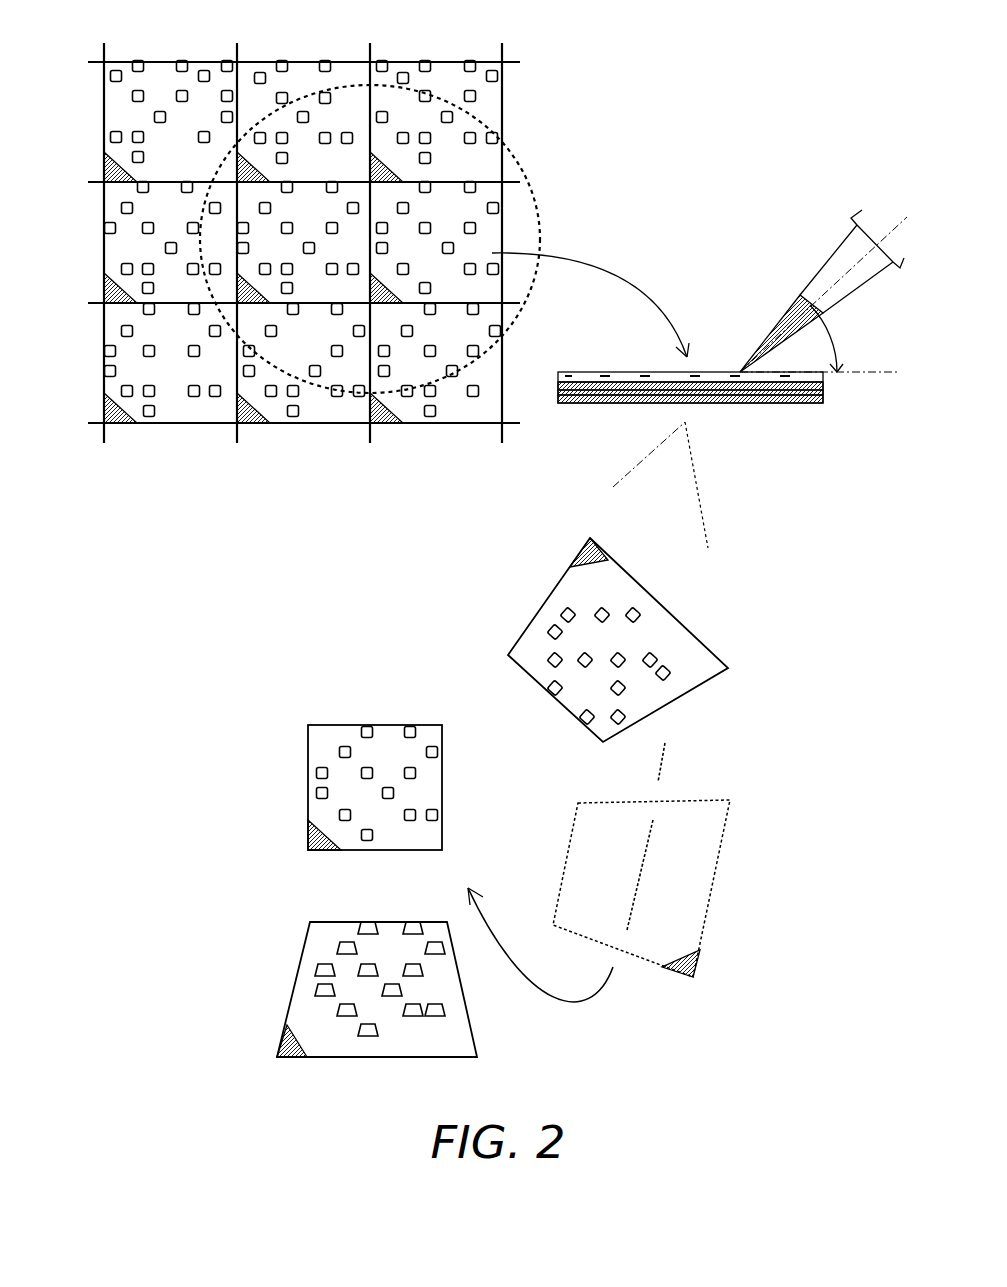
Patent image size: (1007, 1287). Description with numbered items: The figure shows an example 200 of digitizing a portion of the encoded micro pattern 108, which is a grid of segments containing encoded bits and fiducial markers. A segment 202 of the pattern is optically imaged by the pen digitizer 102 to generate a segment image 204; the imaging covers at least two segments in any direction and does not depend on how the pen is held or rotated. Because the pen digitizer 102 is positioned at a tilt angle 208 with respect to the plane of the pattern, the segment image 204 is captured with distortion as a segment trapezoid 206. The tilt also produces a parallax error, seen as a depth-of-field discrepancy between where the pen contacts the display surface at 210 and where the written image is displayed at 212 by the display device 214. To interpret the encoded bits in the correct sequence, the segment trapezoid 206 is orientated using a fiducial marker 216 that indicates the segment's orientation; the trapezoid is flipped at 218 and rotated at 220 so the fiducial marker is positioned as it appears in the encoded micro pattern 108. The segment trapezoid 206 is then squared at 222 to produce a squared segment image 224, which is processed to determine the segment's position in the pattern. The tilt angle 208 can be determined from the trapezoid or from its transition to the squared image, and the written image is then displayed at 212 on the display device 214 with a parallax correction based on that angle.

The example of encoded micro pattern digitizing 200 is at (770, 68).
The encoded micro pattern 108 is at (267, 468).
The pen digitizer 102 is at (817, 275).
The segment 202 is at (497, 235).
The segment image 204 is at (512, 153).
The segment trapezoid 206 is at (693, 633).
The tilt angle 208 is at (883, 354).
The display surface contact point 210 is at (753, 390).
The written image display location 212 is at (717, 390).
The display device 214 is at (797, 397).
The fiducial marker 216 is at (580, 547).
The flipped segment trapezoid 218 is at (712, 778).
The rotated segment trapezoid 220 is at (498, 1025).
The squaring of segment trapezoid 222 is at (283, 820).
The squared segment image 224 is at (337, 725).